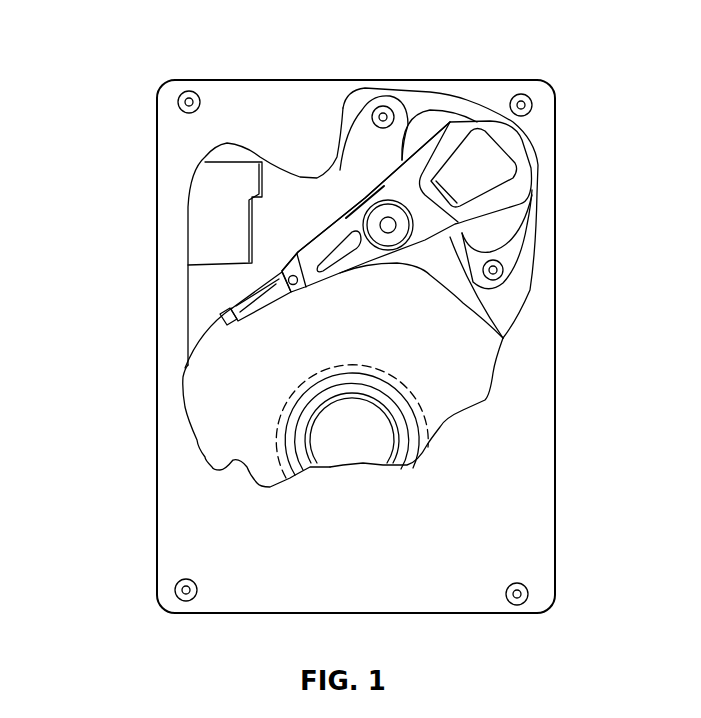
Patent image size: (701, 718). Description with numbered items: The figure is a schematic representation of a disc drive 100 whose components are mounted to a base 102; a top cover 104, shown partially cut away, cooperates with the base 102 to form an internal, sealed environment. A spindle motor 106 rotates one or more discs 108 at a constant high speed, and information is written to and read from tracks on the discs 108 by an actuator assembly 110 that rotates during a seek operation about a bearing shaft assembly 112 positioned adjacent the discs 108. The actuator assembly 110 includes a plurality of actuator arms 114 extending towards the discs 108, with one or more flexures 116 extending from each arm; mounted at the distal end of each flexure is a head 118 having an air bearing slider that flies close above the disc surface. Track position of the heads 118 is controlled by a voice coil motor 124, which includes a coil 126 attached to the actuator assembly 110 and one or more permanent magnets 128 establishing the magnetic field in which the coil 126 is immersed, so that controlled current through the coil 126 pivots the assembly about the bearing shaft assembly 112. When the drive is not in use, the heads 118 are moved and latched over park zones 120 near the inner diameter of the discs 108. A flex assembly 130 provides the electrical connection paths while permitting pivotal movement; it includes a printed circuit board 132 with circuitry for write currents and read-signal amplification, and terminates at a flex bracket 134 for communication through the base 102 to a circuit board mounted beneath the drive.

The disc drive 100 is at (136, 68).
The base 102 is at (197, 275).
The top cover 104 is at (197, 517).
The spindle motor 106 is at (348, 440).
The discs 108 is at (457, 392).
The actuator assembly 110 is at (366, 262).
The bearing shaft assembly 112 is at (389, 225).
The actuator arms 114 is at (344, 277).
The flexures 116 is at (247, 310).
The head 118 is at (226, 330).
The park zones 120 is at (277, 442).
The voice coil motor 124 is at (434, 84).
The coil 126 is at (527, 170).
The permanent magnets 128 is at (408, 135).
The flex assembly 130 is at (328, 228).
The printed circuit board 132 is at (363, 193).
The flex bracket 134 is at (215, 207).